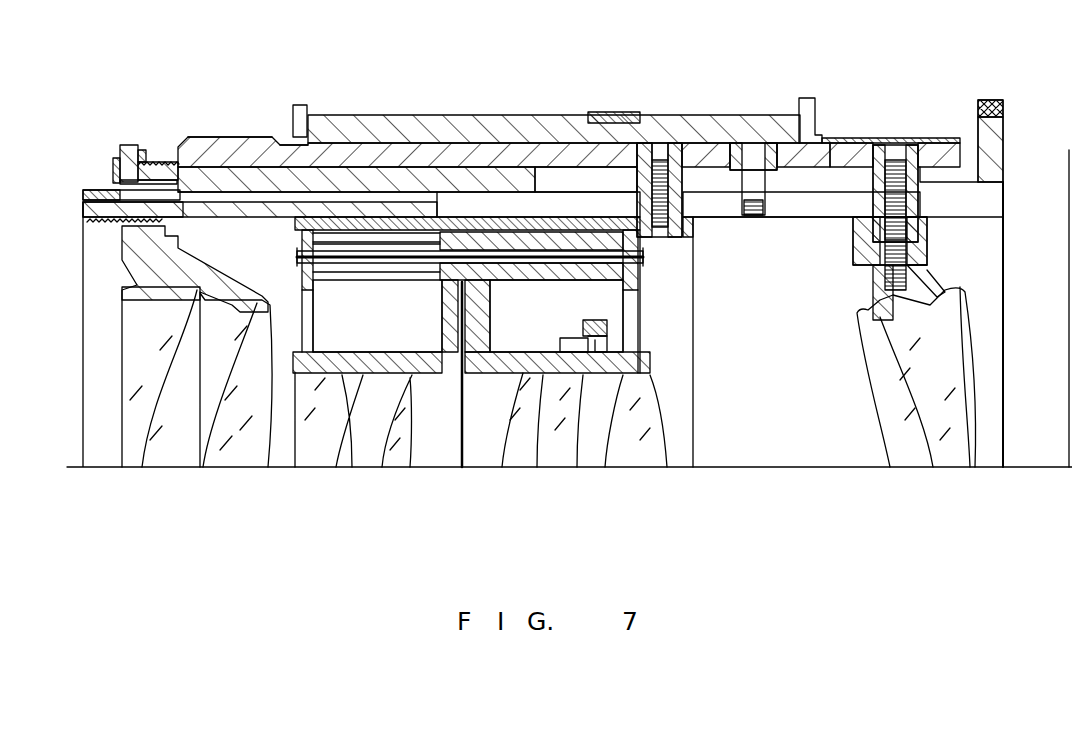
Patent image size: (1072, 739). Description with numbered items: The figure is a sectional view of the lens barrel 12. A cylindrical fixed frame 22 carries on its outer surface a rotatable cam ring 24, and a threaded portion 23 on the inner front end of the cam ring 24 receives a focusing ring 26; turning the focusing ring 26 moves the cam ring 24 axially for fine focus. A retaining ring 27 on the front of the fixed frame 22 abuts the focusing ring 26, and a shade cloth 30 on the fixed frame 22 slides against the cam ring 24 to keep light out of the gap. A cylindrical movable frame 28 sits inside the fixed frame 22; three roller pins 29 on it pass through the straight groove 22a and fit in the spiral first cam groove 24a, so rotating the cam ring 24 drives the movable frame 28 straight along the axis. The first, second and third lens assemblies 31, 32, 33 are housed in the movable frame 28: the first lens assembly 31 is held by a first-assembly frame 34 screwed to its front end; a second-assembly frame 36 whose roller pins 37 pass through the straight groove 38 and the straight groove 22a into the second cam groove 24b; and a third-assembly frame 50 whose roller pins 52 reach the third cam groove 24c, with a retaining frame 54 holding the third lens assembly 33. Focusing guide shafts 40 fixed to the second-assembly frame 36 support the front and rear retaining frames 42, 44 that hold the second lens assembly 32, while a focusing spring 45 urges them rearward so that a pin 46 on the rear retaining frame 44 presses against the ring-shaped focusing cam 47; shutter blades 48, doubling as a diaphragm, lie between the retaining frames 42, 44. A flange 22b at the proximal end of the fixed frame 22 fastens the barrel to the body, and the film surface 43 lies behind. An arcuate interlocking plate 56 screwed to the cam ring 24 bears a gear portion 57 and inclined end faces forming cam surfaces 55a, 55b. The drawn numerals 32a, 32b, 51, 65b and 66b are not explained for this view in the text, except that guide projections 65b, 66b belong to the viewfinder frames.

The lens barrel 12 is at (208, 120).
The fixed frame 22 is at (348, 177).
The straight groove 22a is at (560, 177).
The flange 22b is at (995, 160).
The threaded portion 23 is at (163, 162).
The cam ring 24 is at (243, 143).
The first cam groove 24a is at (755, 157).
The second cam groove 24b is at (681, 154).
The third cam groove 24c is at (895, 151).
The focusing ring 26 is at (128, 146).
The retaining ring 27 is at (115, 160).
The movable frame 28 is at (85, 207).
The roller pin 29 is at (750, 183).
The shade cloth 30 is at (100, 193).
The first lens assembly 31 is at (218, 472).
The second lens assembly 32 is at (481, 464).
The blade 32a is at (350, 472).
The blade 32b is at (584, 443).
The third lens assembly 33 is at (897, 472).
The first-assembly frame 34 is at (138, 256).
The second-assembly frame 36 is at (302, 232).
The roller pin 37 is at (660, 167).
The straight groove 38 is at (473, 207).
The focusing guide shaft 40 is at (645, 263).
The front retaining frame 42 is at (400, 356).
The film surface 43 is at (1069, 250).
The rear retaining frame 44 is at (530, 356).
The focusing spring 45 is at (317, 270).
The pin 46 is at (572, 340).
The focusing cam 47 is at (608, 330).
The shutter blades 48 is at (460, 452).
The third-assembly frame 50 is at (923, 250).
The bolt 51 is at (898, 163).
The roller pin 52 is at (822, 205).
The retaining frame 54 is at (873, 300).
The cam surface 55a is at (290, 142).
The cam surface 55b is at (830, 140).
The interlocking plate 56 is at (404, 126).
The gear portion 57 is at (612, 112).
The guide projection 65b is at (299, 105).
The guide projection 66b is at (815, 100).